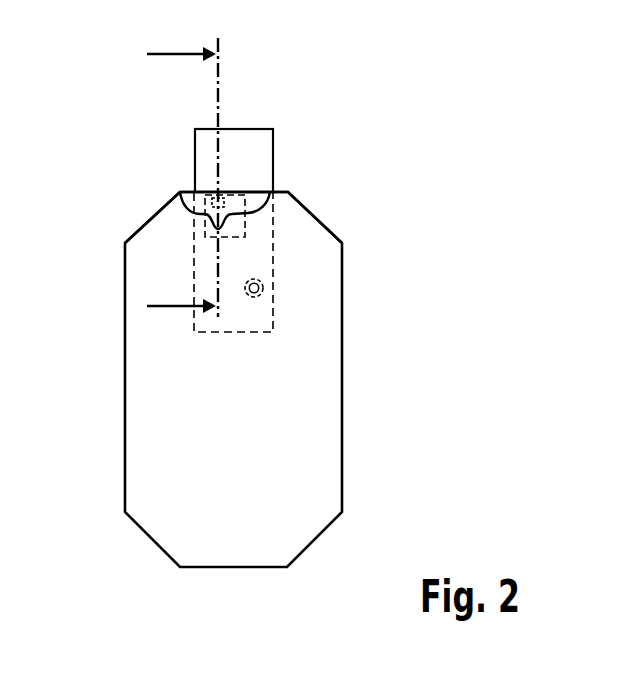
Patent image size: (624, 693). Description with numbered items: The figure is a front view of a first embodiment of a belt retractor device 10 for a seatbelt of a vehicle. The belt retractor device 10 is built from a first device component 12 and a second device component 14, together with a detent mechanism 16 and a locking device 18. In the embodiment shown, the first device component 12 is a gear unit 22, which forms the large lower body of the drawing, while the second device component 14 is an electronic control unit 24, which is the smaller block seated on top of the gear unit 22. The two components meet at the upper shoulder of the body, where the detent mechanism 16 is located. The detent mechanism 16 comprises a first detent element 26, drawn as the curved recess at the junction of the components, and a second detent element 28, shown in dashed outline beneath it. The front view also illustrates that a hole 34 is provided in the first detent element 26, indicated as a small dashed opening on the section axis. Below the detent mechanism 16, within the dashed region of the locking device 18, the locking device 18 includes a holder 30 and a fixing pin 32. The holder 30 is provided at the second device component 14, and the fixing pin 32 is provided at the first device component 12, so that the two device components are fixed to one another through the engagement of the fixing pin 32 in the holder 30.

The belt retractor device 10 is at (344, 134).
The first device component 12 is at (294, 379).
The gear unit 22 is at (305, 447).
The second device component 14 is at (257, 111).
The electronic control unit 24 is at (248, 152).
The detent mechanism 16 is at (150, 182).
The locking device 18 is at (275, 304).
The first detent element 26 is at (258, 203).
The second detent element 28 is at (203, 232).
The holder 30 is at (266, 280).
The fixing pin 32 is at (263, 288).
The hole 34 is at (217, 198).